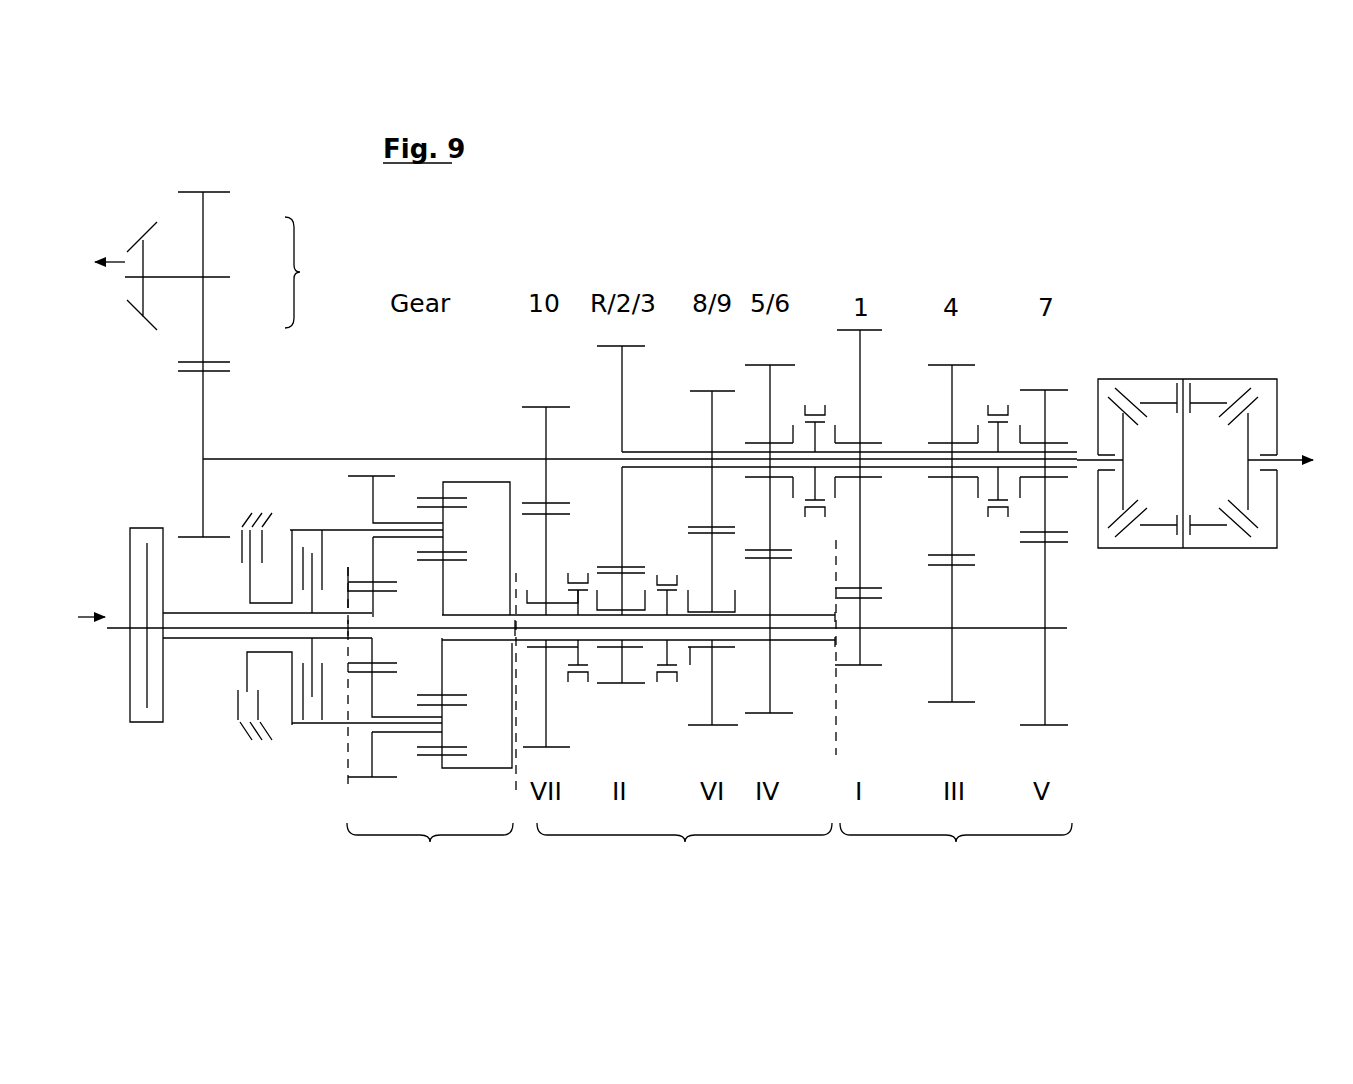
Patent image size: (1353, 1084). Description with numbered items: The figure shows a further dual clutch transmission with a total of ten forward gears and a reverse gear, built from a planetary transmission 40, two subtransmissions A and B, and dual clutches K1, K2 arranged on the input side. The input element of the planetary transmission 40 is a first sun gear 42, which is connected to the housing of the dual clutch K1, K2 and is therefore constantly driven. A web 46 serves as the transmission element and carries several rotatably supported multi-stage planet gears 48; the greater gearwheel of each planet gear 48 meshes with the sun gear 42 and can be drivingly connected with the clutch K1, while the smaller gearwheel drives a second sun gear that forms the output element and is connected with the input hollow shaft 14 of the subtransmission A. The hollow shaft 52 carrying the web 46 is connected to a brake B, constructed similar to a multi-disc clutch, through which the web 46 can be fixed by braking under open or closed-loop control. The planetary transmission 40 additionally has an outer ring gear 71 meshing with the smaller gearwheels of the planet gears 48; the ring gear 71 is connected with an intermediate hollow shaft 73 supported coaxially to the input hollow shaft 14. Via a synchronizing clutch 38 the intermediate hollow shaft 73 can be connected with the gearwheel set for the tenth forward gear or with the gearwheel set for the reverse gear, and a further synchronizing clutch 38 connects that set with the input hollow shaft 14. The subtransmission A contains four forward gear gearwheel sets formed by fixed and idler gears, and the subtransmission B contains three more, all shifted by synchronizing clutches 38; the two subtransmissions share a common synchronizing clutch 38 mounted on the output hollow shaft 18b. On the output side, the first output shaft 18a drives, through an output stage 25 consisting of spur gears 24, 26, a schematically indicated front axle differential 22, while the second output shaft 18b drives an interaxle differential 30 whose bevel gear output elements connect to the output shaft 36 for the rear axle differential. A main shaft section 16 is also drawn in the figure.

The input hollow shaft 14 is at (797, 615).
The output shaft 16 is at (913, 630).
The first output shaft 18a is at (318, 457).
The second output shaft 18b is at (915, 452).
The front axle differential 22 is at (133, 236).
The spur gear 24 is at (205, 310).
The output stage 25 is at (255, 364).
The spur gear 26 is at (205, 233).
The interaxle differential 30 is at (1132, 374).
The output shaft 36 is at (1290, 468).
The synchronizing clutch 38 is at (578, 571).
The planetary transmission 40 is at (430, 850).
The first sun gear 42 is at (373, 602).
The web 46 is at (333, 530).
The multi-stage planet gears 48 is at (397, 523).
The hollow shaft 52 is at (181, 637).
The outer ring gear 71 is at (470, 482).
The intermediate hollow shaft 73 is at (522, 645).
The clutch K1 is at (318, 733).
The clutch K2 is at (124, 567).
The brake B is at (245, 515).
The subtransmission A is at (684, 854).